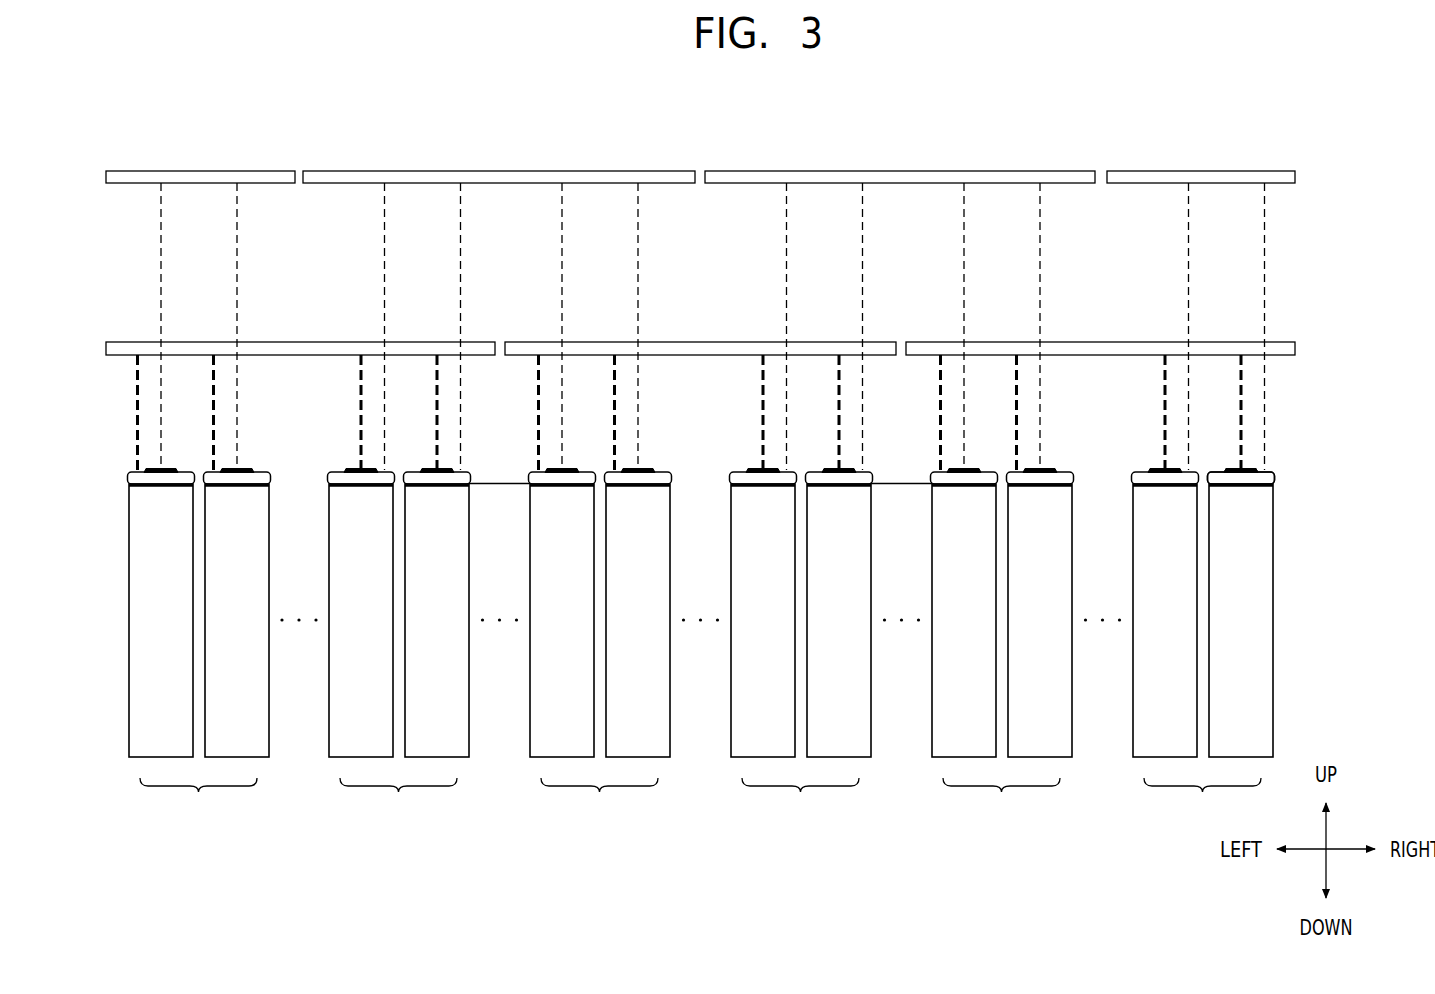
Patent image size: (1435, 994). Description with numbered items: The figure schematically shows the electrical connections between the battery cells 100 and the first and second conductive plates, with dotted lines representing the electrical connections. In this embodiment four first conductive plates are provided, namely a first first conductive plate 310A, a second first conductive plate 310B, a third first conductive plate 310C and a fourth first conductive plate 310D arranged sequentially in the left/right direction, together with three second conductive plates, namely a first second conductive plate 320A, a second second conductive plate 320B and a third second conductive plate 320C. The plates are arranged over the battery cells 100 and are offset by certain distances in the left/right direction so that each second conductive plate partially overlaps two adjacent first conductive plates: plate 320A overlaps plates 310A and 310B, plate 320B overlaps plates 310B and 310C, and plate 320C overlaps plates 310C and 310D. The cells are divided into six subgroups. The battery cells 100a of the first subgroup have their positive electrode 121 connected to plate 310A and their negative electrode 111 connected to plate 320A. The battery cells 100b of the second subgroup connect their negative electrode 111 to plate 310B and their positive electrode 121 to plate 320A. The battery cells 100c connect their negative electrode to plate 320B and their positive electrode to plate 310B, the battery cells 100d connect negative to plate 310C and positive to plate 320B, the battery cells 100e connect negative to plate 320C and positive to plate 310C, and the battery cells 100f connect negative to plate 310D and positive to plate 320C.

The first first conductive plate 310A is at (216, 165).
The second first conductive plate 310B is at (534, 165).
The third first conductive plate 310C is at (932, 165).
The fourth first conductive plate 310D is at (1216, 165).
The first second conductive plate 320A is at (314, 337).
The second second conductive plate 320B is at (710, 338).
The third second conductive plate 320C is at (1114, 337).
The battery cells 100 is at (1377, 697).
The battery cells of first subgroup SG1 100a is at (135, 738).
The battery cells of second subgroup SG2 100b is at (335, 738).
The battery cells of third subgroup SG3 100c is at (536, 738).
The battery cells of fourth subgroup SG4 100d is at (737, 738).
The battery cells of fifth subgroup SG5 100e is at (938, 738).
The battery cells of sixth subgroup SG6 100f is at (1139, 738).
The positive electrode 121 is at (1245, 471).
The negative electrode 111 is at (1271, 474).